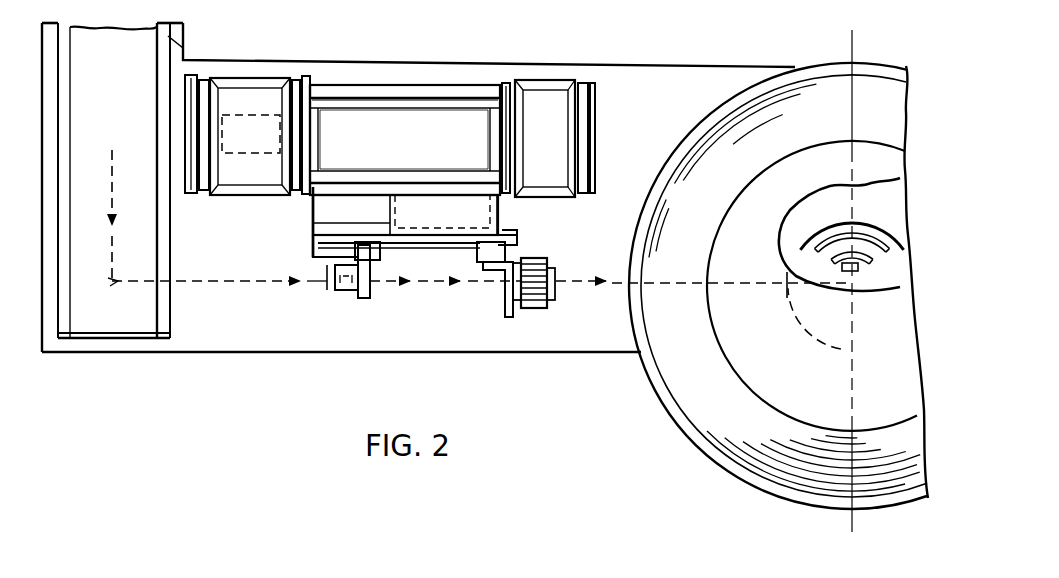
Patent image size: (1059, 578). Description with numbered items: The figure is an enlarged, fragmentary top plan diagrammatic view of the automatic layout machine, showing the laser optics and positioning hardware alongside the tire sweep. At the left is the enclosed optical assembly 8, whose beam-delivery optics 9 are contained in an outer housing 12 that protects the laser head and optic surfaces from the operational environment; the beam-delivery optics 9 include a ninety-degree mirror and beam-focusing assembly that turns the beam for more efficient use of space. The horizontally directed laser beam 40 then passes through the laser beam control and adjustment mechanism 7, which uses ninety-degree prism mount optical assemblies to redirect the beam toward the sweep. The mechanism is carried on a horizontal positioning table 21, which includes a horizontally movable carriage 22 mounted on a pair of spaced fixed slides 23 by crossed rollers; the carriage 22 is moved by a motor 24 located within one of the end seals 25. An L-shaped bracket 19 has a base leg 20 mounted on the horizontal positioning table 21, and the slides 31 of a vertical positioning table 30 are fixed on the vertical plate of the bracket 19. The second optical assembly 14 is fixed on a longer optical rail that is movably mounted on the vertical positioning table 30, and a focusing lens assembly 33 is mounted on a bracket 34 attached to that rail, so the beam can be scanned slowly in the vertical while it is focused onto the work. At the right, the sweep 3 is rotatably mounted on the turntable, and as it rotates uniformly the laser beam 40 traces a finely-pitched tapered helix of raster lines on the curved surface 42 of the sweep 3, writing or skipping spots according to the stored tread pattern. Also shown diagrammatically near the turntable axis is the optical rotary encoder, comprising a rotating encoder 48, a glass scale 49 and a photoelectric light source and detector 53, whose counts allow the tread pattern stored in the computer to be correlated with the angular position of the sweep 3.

The sweep 3 is at (812, 476).
The laser beam control and adjustment mechanism 7 is at (390, 80).
The optical assembly 8 is at (178, 48).
The beam-delivery optics 9 is at (113, 285).
The outer housing 12 is at (62, 325).
The optical assembly 14 is at (346, 292).
The L-shaped bracket 19 is at (300, 205).
The base leg 20 is at (362, 157).
The horizontal positioning table 21 is at (331, 86).
The carriage 22 is at (372, 128).
The slides 23 is at (440, 98).
The motor 24 is at (249, 125).
The end seals 25 is at (566, 95).
The vertical positioning table 30 is at (445, 255).
The slides 31 is at (516, 232).
The focusing lens assembly 33 is at (550, 263).
The bracket 34 is at (507, 296).
The laser beam 40 is at (240, 282).
The curved surface 42 is at (746, 462).
The rotating encoder 48 is at (882, 248).
The glass scale 49 is at (862, 263).
The photoelectric light source and detector 53 is at (882, 291).